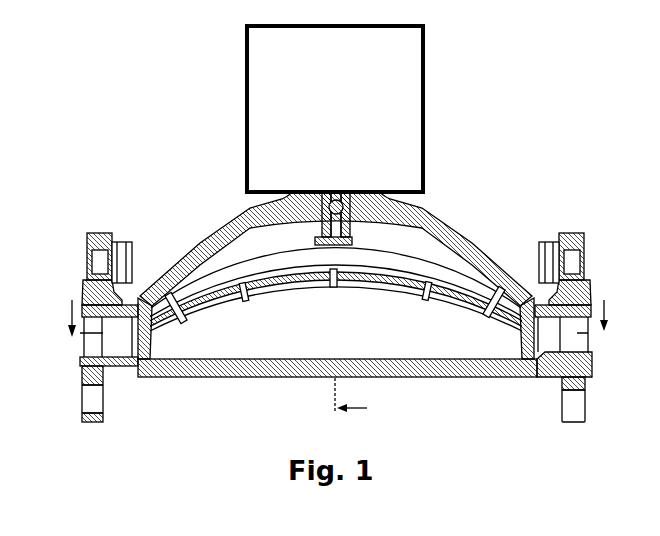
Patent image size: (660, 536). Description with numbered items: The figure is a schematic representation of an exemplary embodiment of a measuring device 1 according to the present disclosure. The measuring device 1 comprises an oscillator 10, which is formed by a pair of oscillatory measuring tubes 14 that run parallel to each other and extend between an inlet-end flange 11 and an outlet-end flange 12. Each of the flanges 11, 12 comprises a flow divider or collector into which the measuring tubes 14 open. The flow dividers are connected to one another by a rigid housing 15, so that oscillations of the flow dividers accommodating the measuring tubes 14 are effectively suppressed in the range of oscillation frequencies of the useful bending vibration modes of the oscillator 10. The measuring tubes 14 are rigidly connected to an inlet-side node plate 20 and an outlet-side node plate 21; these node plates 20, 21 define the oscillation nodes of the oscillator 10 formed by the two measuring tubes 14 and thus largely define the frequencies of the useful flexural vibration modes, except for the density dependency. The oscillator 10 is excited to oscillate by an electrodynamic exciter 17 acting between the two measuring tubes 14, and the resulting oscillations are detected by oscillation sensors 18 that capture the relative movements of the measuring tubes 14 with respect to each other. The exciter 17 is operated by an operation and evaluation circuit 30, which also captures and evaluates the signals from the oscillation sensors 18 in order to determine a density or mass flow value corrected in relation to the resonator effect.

The measuring device 1 is at (184, 81).
The oscillator 10 is at (225, 273).
The inlet-end flange 11 is at (101, 236).
The outlet-end flange 12 is at (572, 232).
The oscillatory measuring tubes 14 is at (394, 255).
The rigid housing 15 is at (443, 231).
The electrodynamic exciter 17 is at (338, 283).
The oscillation sensor 18 is at (242, 301).
The inlet-side node plate 20 is at (168, 280).
The outlet-side node plate 21 is at (498, 282).
The operation and evaluation circuit 30 is at (412, 97).